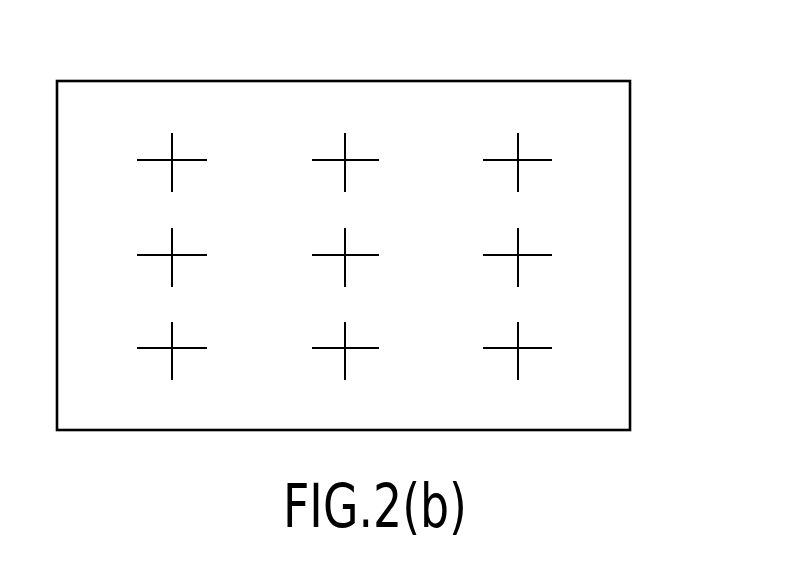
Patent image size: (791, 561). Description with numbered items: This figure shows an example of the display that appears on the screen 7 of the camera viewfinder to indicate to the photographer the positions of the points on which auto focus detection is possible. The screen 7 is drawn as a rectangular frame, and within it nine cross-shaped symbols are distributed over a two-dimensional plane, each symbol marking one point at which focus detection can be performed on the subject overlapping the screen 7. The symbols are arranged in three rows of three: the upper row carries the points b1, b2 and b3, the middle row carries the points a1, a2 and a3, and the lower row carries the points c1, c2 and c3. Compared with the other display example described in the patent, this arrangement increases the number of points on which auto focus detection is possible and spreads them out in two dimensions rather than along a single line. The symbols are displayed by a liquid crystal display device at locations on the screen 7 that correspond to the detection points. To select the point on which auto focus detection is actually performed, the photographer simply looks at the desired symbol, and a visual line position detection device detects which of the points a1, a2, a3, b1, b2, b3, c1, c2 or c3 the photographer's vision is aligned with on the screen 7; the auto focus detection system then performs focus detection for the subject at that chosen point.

The screen 7 is at (630, 100).
The point a1 is at (177, 262).
The point a2 is at (351, 262).
The point a3 is at (523, 262).
The point b1 is at (177, 168).
The point b2 is at (351, 168).
The point b3 is at (523, 168).
The point c1 is at (177, 356).
The point c2 is at (351, 356).
The point c3 is at (523, 356).